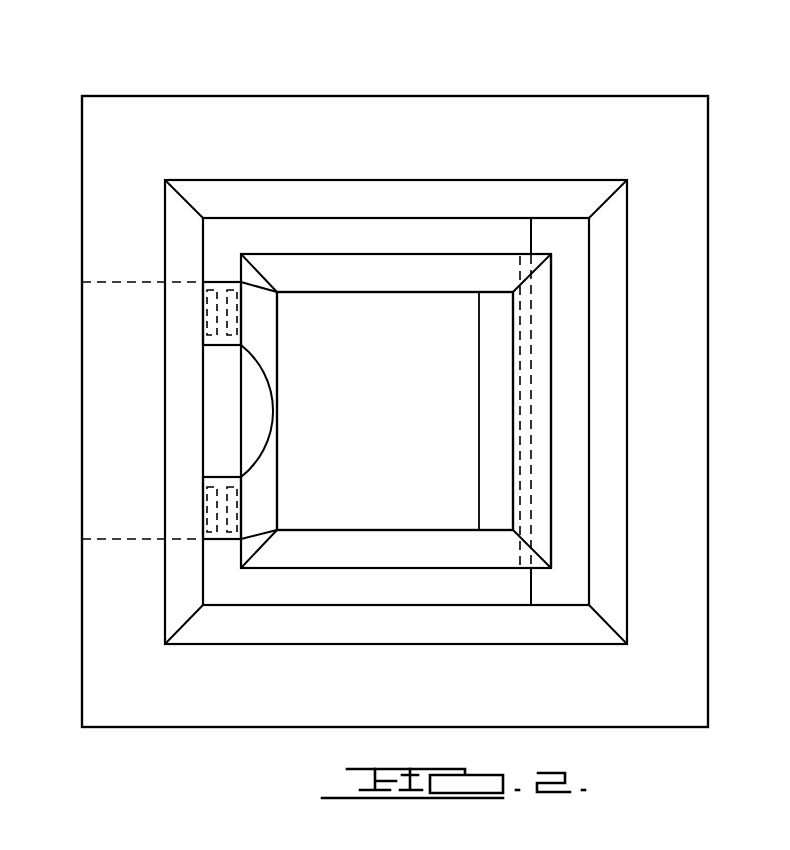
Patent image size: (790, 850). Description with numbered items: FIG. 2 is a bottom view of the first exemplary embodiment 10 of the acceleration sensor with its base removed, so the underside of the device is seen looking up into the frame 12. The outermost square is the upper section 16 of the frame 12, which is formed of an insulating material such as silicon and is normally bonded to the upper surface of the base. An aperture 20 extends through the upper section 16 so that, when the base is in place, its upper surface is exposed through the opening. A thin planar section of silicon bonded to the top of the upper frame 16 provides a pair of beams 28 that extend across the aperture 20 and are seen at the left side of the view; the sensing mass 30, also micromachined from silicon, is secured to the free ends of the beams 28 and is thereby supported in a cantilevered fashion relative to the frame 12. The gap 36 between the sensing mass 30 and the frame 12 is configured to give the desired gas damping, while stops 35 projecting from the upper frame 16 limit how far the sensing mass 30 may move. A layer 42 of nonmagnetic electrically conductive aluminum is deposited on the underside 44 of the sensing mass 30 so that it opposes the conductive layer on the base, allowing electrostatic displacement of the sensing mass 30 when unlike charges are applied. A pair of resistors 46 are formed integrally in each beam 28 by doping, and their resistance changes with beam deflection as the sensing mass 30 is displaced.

The acceleration sensor 10 is at (366, 372).
The frame 12 is at (82, 88).
The upper section 16 is at (495, 95).
The aperture 20 is at (382, 202).
The beams 28 is at (217, 282).
The sensing mass 30 is at (553, 312).
The stops 35 is at (531, 588).
The gap 36 is at (451, 250).
The layer 42 is at (392, 407).
The underside 44 is at (490, 345).
The resistors 46 is at (241, 318).